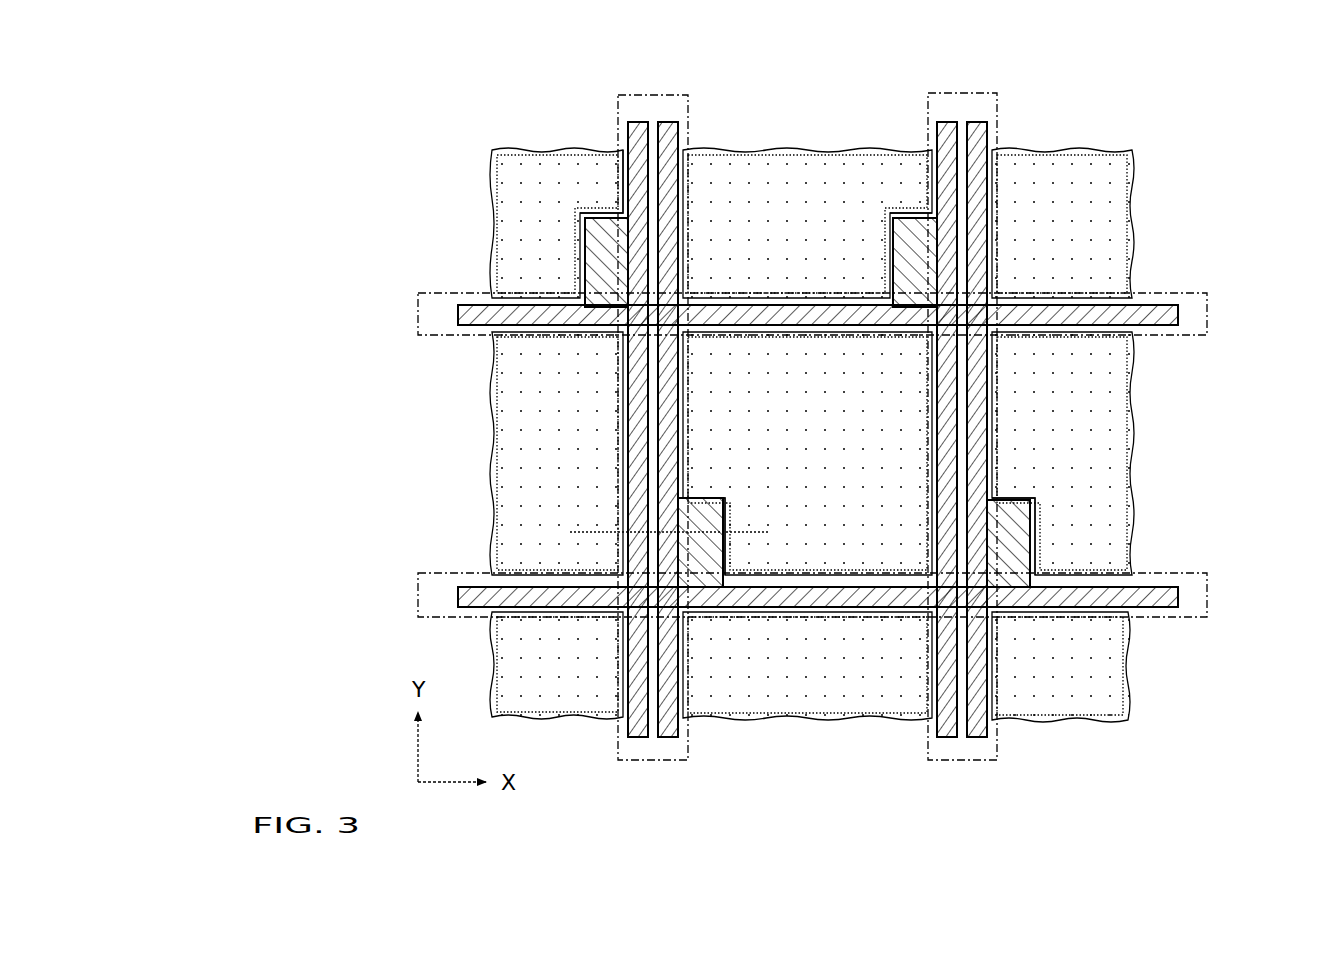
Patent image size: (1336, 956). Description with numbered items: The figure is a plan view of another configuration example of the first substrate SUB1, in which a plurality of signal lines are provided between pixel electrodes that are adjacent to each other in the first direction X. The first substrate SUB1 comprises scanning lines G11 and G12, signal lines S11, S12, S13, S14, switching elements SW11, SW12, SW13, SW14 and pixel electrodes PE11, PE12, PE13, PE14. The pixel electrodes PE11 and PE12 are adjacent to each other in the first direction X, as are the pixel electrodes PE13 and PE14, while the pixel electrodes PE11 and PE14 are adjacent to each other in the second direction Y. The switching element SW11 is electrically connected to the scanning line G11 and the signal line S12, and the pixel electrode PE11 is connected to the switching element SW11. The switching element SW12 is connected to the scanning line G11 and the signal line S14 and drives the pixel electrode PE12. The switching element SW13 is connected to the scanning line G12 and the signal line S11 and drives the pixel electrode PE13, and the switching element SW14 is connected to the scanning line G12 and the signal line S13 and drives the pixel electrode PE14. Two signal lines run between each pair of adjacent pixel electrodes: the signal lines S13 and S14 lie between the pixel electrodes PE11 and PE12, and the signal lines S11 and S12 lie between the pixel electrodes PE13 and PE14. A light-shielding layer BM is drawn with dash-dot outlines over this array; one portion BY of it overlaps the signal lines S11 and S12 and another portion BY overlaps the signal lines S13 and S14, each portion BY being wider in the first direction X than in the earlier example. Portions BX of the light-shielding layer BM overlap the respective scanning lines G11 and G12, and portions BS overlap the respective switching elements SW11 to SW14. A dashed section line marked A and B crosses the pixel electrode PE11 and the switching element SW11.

The first substrate SUB1 is at (1188, 129).
The pixel electrode PE11 is at (815, 545).
The pixel electrode PE12 is at (1105, 560).
The pixel electrode PE13 is at (518, 163).
The pixel electrode PE14 is at (752, 165).
The switching element SW11 is at (707, 560).
The switching element SW12 is at (1012, 560).
The switching element SW13 is at (608, 215).
The switching element SW14 is at (913, 215).
The signal line S11 is at (640, 739).
The signal line S12 is at (667, 739).
The signal line S13 is at (947, 739).
The signal line S14 is at (977, 739).
The scanning line G11 is at (1180, 597).
The scanning line G12 is at (1180, 315).
The light-shielding layer BM is at (812, 399).
The portion of the light-shielding layer BX is at (876, 341).
The portion of the light-shielding layer BY is at (694, 375).
The portion of the light-shielding layer BS is at (577, 209).
The section line end A is at (602, 532).
The section line end B is at (717, 532).